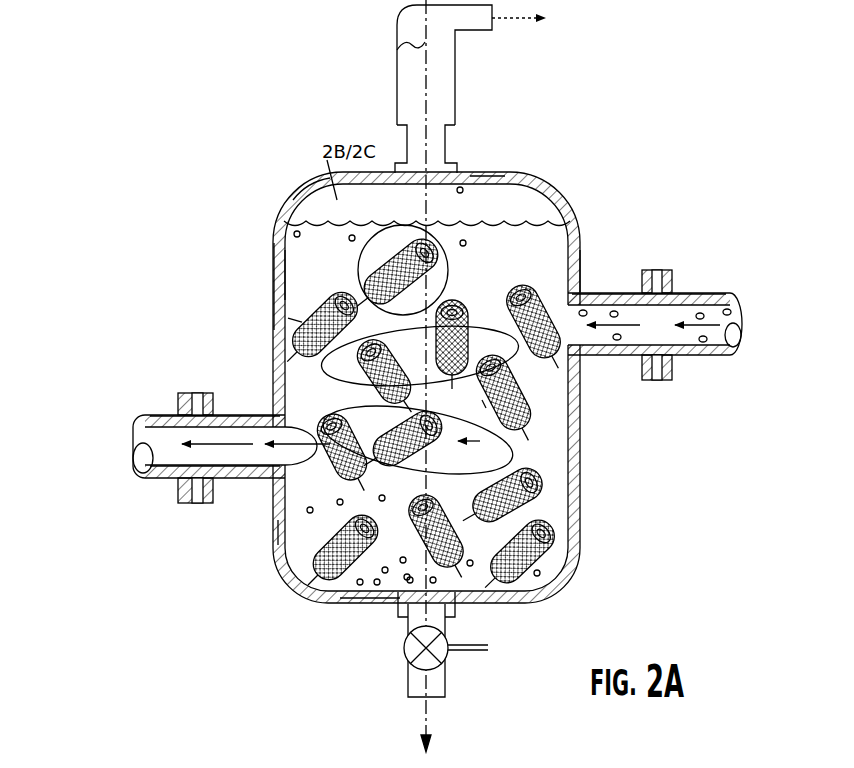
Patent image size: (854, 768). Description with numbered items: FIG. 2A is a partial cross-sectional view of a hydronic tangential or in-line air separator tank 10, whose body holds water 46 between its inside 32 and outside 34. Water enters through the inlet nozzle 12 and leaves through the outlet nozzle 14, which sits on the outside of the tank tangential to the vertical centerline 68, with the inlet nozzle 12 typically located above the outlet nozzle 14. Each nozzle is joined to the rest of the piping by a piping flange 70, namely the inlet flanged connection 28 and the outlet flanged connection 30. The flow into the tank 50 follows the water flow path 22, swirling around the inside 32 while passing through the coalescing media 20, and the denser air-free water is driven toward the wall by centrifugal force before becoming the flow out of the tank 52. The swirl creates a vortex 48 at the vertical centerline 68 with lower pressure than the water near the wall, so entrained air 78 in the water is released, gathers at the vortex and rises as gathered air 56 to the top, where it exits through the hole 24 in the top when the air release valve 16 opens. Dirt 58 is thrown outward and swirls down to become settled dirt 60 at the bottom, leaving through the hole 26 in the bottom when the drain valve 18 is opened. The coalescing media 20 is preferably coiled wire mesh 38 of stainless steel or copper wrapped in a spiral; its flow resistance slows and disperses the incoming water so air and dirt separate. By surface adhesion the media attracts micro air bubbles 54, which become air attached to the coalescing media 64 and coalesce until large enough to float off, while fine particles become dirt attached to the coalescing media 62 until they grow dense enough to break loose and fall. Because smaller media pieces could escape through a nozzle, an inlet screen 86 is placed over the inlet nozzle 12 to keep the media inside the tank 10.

The hydronic tangential or in-line air separator tank 10 is at (587, 568).
The inlet nozzle 12 is at (664, 316).
The outlet nozzle 14 is at (133, 430).
The air release valve 16 is at (457, 82).
The drain valve 18 is at (385, 651).
The coalescing media 20 is at (355, 280).
The water flow path 22 is at (513, 452).
The hole in top of air separator tank 24 is at (453, 173).
The hole in bottom of air separator tank 26 is at (470, 590).
The flanged connection, inlet 28 is at (652, 270).
The flanged connection, outlet 30 is at (205, 503).
The inside of air separator tank 32 is at (295, 268).
The outside of air separator tank 34 is at (300, 322).
The wire mesh, coalescing media 38 is at (270, 362).
The water in tank 46 is at (293, 200).
The vortex 48 is at (268, 372).
The flow into tank 50 is at (703, 327).
The flow out of tank 52 is at (183, 478).
The micro air bubbles in water 54 is at (280, 242).
The gathered air 56 is at (487, 185).
The dirt in water 58 is at (290, 545).
The settled dirt 60 is at (405, 604).
The dirt attached to coalescing media 62 is at (482, 404).
The air attached to coalescing media 64 is at (505, 312).
The vertical centerline of the tank 68 is at (397, 50).
The piping flange 70 is at (663, 383).
The entrained air in the water 78 is at (601, 300).
The inlet screen 86 is at (580, 252).